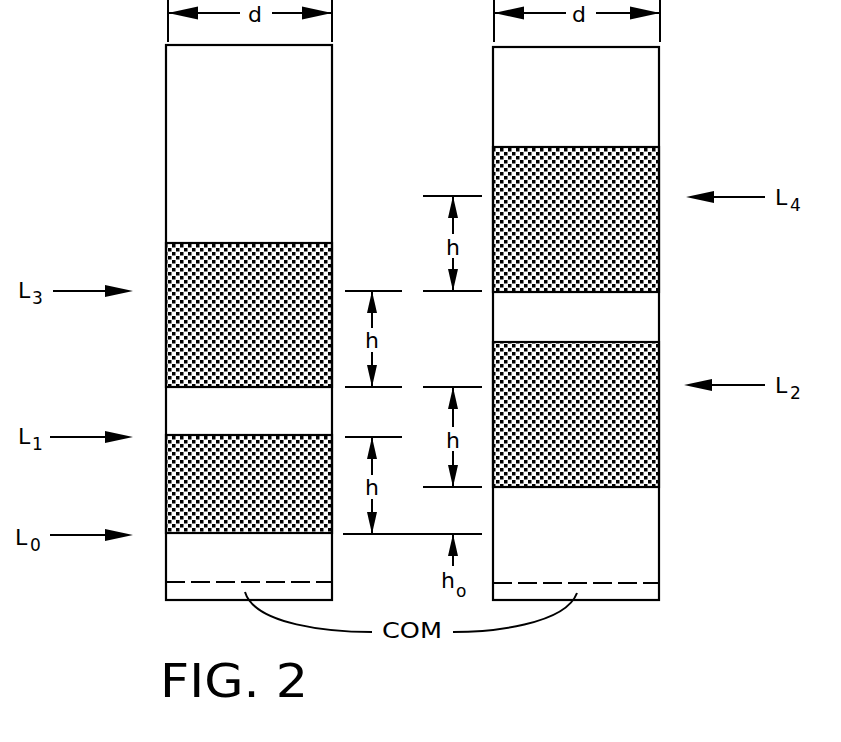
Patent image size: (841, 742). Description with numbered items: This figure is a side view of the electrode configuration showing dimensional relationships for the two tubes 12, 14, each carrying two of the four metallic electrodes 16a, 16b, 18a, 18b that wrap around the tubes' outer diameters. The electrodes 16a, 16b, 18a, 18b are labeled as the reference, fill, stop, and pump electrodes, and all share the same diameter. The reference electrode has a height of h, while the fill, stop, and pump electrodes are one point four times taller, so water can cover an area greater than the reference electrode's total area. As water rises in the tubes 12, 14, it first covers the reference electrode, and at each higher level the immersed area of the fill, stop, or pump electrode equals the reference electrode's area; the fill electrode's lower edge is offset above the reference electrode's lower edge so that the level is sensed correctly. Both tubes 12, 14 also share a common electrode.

The tube 12 is at (265, 153).
The tube 14 is at (591, 117).
The metallic electrode 16a is at (195, 272).
The metallic electrode 16b is at (207, 513).
The metallic electrode 18a is at (640, 162).
The metallic electrode 18b is at (622, 468).